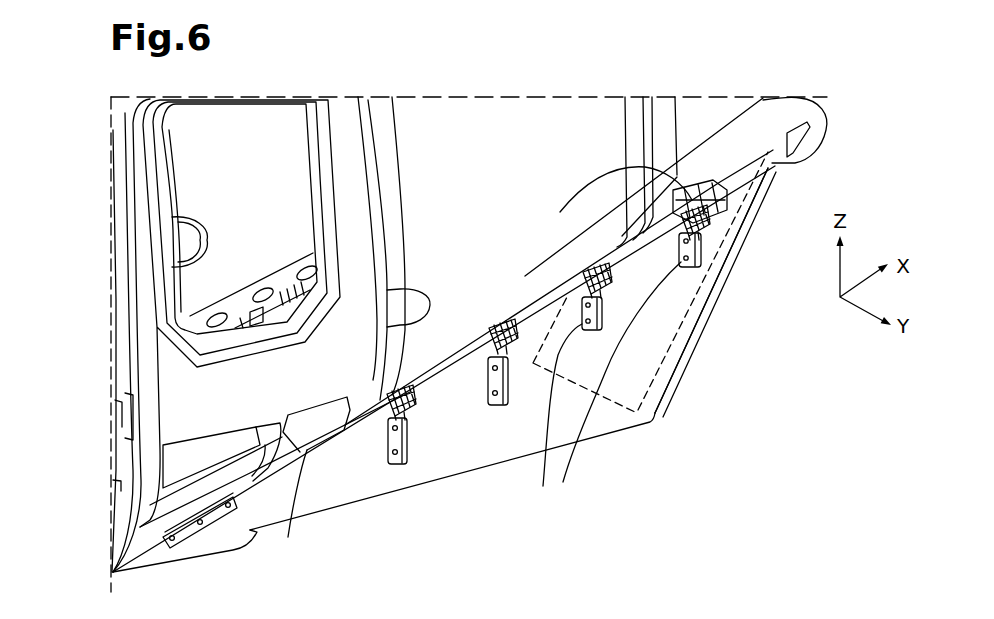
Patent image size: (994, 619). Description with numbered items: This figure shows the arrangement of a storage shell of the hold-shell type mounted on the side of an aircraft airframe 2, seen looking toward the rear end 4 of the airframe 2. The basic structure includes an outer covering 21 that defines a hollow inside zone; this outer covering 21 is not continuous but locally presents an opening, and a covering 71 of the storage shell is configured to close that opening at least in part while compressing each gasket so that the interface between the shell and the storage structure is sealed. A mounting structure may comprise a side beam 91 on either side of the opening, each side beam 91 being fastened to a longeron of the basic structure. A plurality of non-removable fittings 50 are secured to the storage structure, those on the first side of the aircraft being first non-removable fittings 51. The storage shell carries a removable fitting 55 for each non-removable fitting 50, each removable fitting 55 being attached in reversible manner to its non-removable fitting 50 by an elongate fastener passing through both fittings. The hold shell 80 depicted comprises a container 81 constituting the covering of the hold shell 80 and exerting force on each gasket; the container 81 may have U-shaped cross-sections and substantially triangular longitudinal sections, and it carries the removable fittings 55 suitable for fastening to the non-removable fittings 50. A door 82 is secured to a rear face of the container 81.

The outer covering 21 is at (500, 128).
The rear end 4 is at (912, 97).
The airframe 2 is at (38, 543).
The non-removable fitting 50 is at (557, 339).
The first non-removable fitting 51 is at (557, 300).
The removable fitting 55 is at (409, 447).
The covering 71 is at (363, 480).
The hold shell 80 is at (516, 353).
The container 81 is at (618, 435).
The door 82 is at (663, 317).
The side beam 91 is at (328, 442).